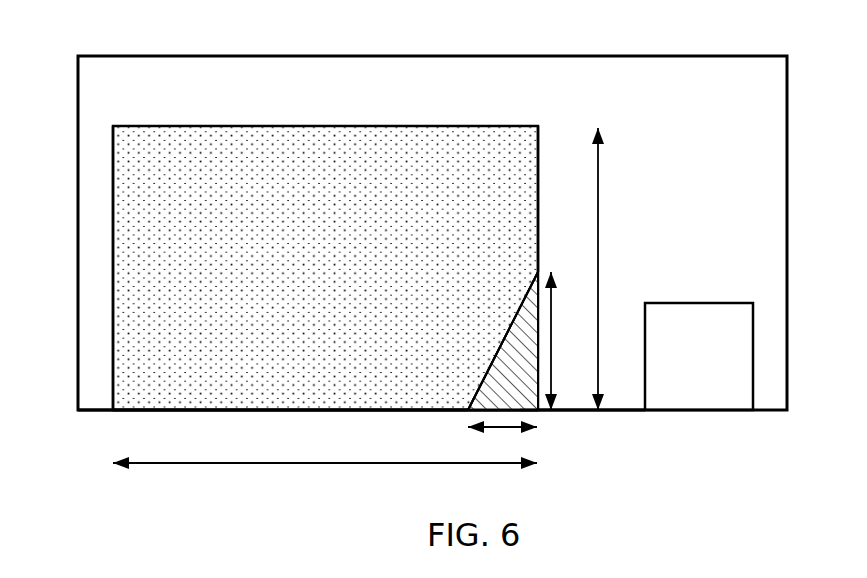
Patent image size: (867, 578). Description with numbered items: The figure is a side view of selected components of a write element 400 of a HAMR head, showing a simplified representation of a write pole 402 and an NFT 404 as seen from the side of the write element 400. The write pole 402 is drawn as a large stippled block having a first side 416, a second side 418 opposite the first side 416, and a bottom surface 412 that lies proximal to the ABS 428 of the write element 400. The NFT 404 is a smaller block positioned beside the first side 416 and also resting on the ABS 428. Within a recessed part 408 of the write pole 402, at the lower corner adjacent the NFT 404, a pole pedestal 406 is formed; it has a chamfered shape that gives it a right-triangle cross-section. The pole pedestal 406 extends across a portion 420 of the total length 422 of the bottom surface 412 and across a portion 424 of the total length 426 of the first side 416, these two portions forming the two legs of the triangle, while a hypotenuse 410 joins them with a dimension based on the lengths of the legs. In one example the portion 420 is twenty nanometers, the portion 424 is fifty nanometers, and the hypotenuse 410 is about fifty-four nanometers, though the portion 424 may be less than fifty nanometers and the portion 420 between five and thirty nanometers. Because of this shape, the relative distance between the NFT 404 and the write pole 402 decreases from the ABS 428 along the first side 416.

The write element 400 is at (450, 56).
The write pole 402 is at (253, 126).
The NFT 404 is at (679, 303).
The pole pedestal 406 is at (519, 305).
The recessed part 408 is at (546, 417).
The hypotenuse 410 is at (492, 328).
The bottom surface 412 is at (289, 400).
The first side 416 is at (548, 156).
The second side 418 is at (126, 305).
The portion of the total length of the bottom surface 420 is at (502, 443).
The total length of the bottom surface 422 is at (325, 478).
The portion of the total length of the first side 424 is at (572, 341).
The total length of the first side 426 is at (619, 269).
The ABS 428 is at (97, 410).